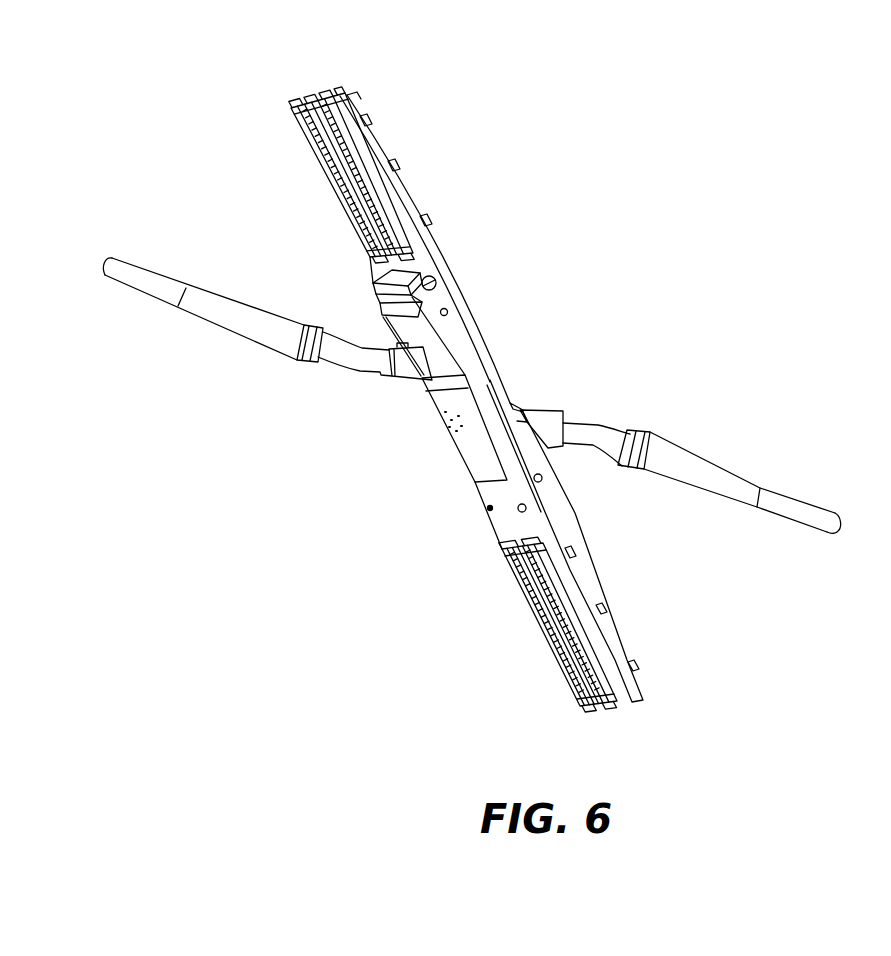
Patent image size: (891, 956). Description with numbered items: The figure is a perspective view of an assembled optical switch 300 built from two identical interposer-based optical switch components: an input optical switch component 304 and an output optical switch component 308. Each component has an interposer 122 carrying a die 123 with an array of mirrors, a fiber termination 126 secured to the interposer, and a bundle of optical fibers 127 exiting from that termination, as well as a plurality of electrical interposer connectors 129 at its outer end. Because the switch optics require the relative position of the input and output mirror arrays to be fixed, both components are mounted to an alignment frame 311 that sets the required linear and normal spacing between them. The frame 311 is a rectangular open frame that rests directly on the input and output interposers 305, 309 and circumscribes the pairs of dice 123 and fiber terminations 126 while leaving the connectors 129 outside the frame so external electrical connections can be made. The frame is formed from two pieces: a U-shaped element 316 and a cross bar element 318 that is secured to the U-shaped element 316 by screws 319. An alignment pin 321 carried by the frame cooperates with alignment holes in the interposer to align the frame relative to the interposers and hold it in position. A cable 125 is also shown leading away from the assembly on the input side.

The optical switch 300 is at (688, 167).
The input optical switch component 304 is at (412, 115).
The input interposer 305 is at (400, 190).
The output optical switch component 308 is at (637, 595).
The output interposer 309 is at (620, 667).
The alignment frame 311 is at (463, 337).
The U-shaped element 316 is at (574, 513).
The cross bar element 318 is at (424, 262).
The screws 319 is at (434, 273).
The alignment pin 321 is at (518, 506).
The interposer 122 is at (510, 515).
The die 123 is at (460, 433).
The first cable 125 is at (378, 322).
The fiber termination 126 is at (550, 414).
The bundle of optical fibers 127 is at (796, 503).
The electrical interposer connectors 129 is at (305, 121).